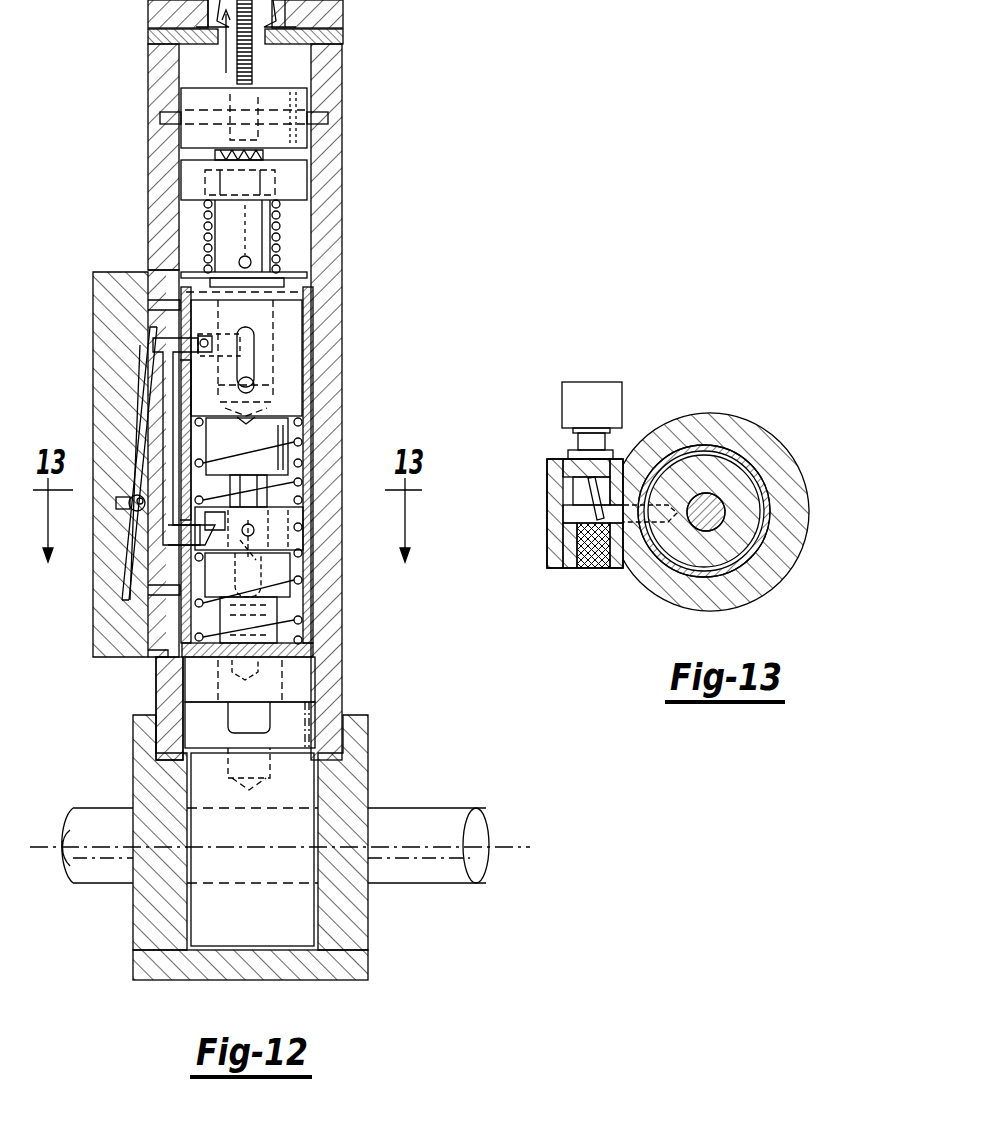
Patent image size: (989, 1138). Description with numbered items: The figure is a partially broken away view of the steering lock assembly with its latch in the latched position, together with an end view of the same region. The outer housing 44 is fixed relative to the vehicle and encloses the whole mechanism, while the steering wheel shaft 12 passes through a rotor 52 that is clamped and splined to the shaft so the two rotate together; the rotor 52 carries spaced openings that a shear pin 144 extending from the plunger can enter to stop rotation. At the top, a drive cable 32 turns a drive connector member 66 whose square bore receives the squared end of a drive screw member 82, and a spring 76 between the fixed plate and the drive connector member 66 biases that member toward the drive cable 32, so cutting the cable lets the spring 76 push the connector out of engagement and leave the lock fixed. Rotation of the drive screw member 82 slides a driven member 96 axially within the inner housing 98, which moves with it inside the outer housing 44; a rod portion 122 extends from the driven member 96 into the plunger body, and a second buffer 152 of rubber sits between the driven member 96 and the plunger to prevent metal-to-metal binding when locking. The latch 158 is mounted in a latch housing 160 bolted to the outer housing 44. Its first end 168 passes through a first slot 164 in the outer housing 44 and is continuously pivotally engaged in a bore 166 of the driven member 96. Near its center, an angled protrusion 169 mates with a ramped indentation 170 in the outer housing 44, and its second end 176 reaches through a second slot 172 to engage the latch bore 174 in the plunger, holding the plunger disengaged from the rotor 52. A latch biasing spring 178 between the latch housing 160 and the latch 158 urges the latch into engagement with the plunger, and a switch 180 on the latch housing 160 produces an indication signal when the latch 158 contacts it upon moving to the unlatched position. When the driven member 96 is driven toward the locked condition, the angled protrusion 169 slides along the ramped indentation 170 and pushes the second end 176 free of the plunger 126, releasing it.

In FIG. 12, the steering wheel shaft 12 is at (463, 858).
In FIG. 12, the drive cable 32 is at (253, 62).
In FIG. 12, the outer housing 44 is at (346, 147).
In FIG. 13, the outer housing 44 is at (700, 428).
In FIG. 12, the rotor 52 is at (295, 785).
In FIG. 12, the drive connector member 66 is at (292, 100).
In FIG. 12, the spring 76 is at (280, 220).
In FIG. 12, the drive screw member 82 is at (250, 248).
In FIG. 12, the driven member 96 is at (290, 397).
In FIG. 12, the inner housing 98 is at (284, 544).
In FIG. 13, the inner housing 98 is at (750, 468).
In FIG. 12, the rod portion 122 is at (255, 483).
In FIG. 13, the rod portion 122 is at (706, 518).
In FIG. 12, the lower valve block 126 is at (300, 555).
In FIG. 12, the shear pin 144 is at (258, 712).
In FIG. 12, the second buffer 152 is at (285, 473).
In FIG. 12, the latch 158 is at (185, 535).
In FIG. 13, the latch 158 is at (592, 560).
In FIG. 12, the latch housing 160 is at (136, 630).
In FIG. 13, the latch housing 160 is at (560, 535).
In FIG. 12, the first slot 164 is at (150, 327).
In FIG. 12, the bore 166 is at (215, 335).
In FIG. 12, the first end 168 is at (212, 350).
In FIG. 12, the angled protrusion 169 is at (180, 458).
In FIG. 12, the ramped indentation 170 is at (232, 463).
In FIG. 12, the second slot 172 is at (172, 586).
In FIG. 12, the latch bore 174 is at (303, 584).
In FIG. 12, the second end 176 is at (153, 545).
In FIG. 12, the latch biasing spring 178 is at (139, 388).
In FIG. 13, the latch biasing spring 178 is at (597, 497).
In FIG. 12, the switch 180 is at (135, 508).